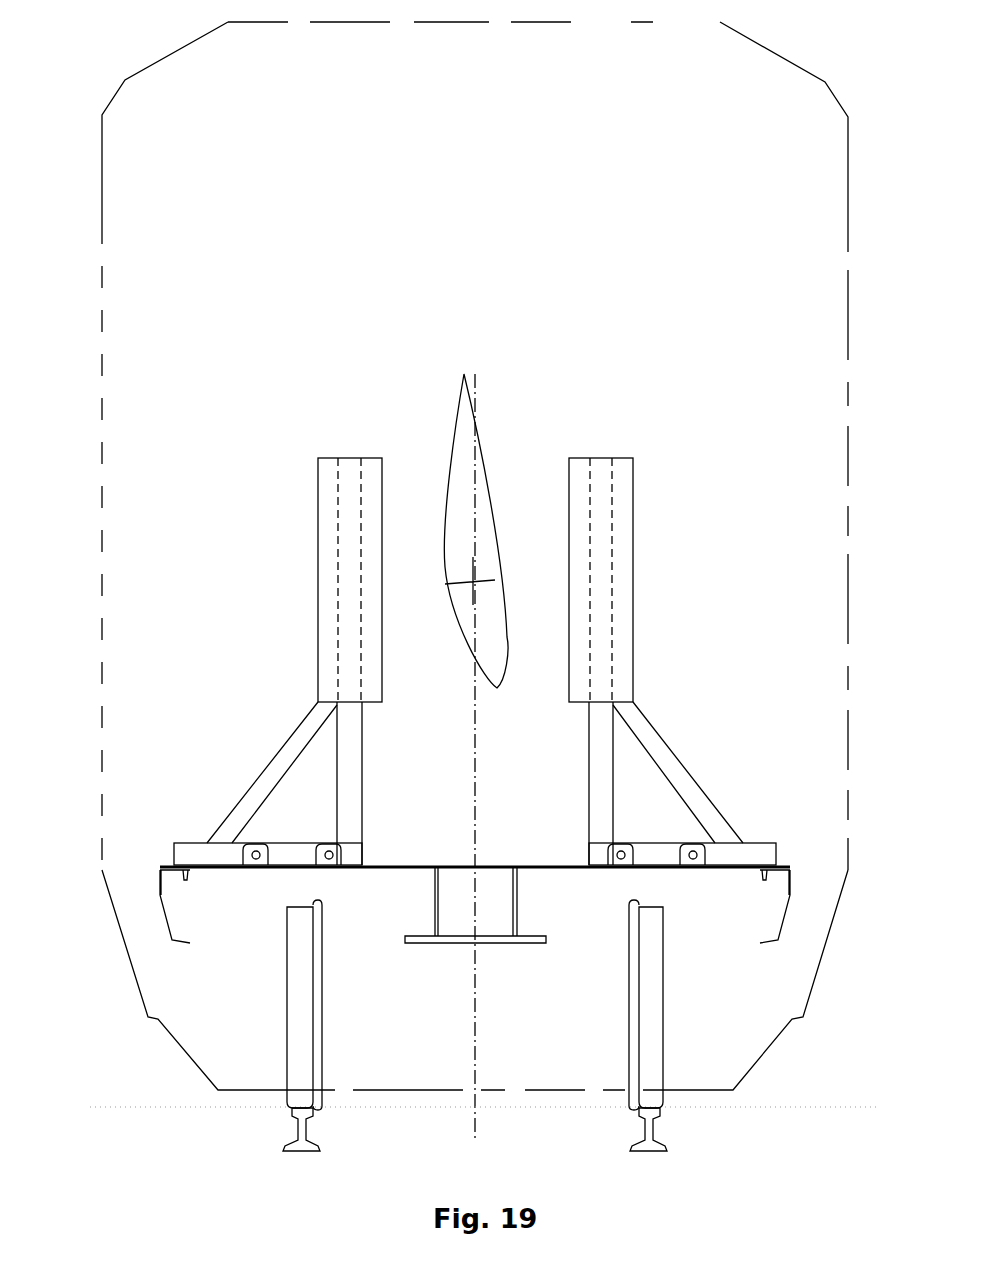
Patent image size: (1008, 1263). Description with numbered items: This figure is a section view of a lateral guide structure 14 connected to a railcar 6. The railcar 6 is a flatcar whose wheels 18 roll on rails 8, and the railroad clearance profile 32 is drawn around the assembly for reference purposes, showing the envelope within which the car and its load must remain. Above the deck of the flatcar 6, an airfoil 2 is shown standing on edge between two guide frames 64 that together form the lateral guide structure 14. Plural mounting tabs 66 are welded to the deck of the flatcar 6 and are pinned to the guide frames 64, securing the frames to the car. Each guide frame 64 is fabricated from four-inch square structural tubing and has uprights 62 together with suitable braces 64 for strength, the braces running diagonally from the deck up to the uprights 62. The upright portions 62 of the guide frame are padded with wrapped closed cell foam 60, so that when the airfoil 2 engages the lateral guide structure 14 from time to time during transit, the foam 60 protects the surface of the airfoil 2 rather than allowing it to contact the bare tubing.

The railroad clearance profile 32 is at (113, 101).
The airfoil 2 is at (473, 438).
The railcar 6 is at (160, 920).
The lateral guide structure 14 is at (170, 714).
The wrapped closed cell foam 60 is at (318, 542).
The uprights 62 is at (362, 796).
The guide frames 64 is at (260, 762).
The mounting tabs 66 is at (313, 843).
The wheels 18 is at (663, 1005).
The rails 8 is at (649, 1125).